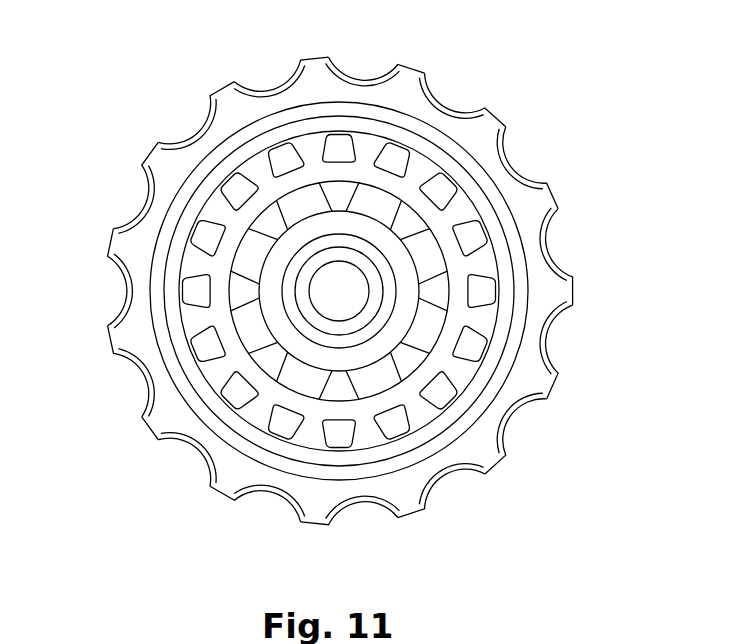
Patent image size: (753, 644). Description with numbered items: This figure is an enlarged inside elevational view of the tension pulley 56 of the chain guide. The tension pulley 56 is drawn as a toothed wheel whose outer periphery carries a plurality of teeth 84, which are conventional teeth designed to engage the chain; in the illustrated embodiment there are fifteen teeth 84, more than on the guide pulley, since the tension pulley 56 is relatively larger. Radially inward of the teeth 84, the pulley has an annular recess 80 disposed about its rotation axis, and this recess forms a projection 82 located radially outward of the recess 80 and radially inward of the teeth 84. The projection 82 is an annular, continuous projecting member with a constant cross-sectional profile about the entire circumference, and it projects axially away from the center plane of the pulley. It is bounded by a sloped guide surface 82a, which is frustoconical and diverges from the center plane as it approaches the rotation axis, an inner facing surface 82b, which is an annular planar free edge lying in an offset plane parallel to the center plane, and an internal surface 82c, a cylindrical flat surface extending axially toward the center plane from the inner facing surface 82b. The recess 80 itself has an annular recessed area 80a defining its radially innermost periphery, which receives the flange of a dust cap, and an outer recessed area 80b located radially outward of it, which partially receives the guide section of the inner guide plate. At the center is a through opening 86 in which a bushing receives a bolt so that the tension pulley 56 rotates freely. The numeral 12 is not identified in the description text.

The bicycle sprocket assembly 12 is at (62, 52).
The tension pulley 56 is at (514, 102).
The annular recess 80 is at (233, 193).
The annular recessed area 80a is at (292, 312).
The outer recessed area 80b is at (264, 400).
The projection 82 is at (381, 100).
The sloped guide surface 82a is at (481, 171).
The inner facing surface 82b is at (492, 222).
The internal surface 82c is at (530, 279).
The teeth 84 is at (222, 470).
The through opening 86 is at (309, 289).